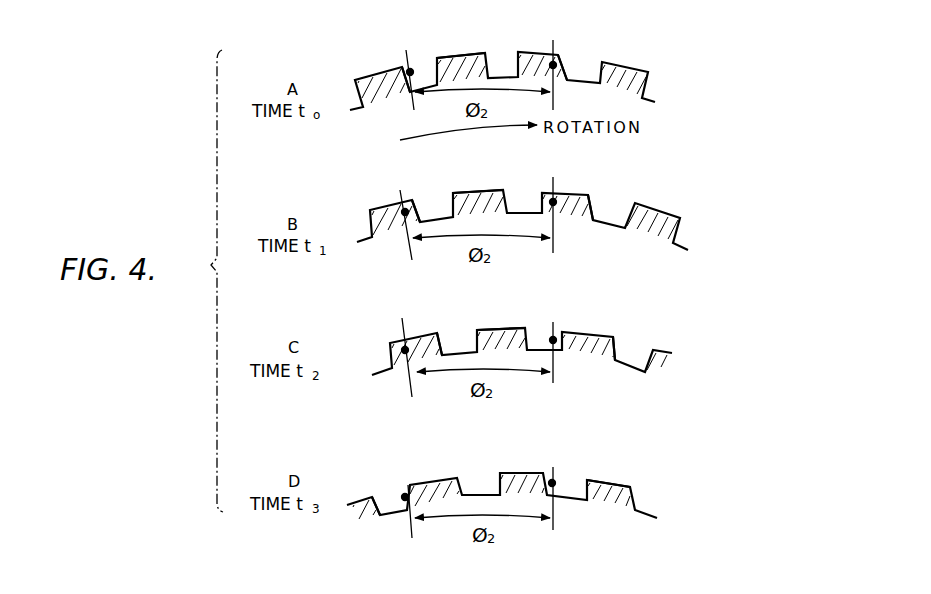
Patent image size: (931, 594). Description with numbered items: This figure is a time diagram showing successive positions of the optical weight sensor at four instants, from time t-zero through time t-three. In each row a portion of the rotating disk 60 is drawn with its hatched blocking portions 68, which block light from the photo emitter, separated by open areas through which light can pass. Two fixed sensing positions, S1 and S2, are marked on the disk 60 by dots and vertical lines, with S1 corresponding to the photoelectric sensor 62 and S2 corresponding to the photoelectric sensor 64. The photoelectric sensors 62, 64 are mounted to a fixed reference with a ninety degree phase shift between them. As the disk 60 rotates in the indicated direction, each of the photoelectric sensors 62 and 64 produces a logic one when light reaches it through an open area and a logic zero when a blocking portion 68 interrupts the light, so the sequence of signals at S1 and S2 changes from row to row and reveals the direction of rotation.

The disk 60 is at (660, 68).
The photoelectric sensor 62 is at (412, 68).
The photoelectric sensor 64 is at (562, 72).
The blocking portions 68 is at (478, 53).
The sensor signal S1 is at (398, 285).
The sensor signal S2 is at (561, 274).